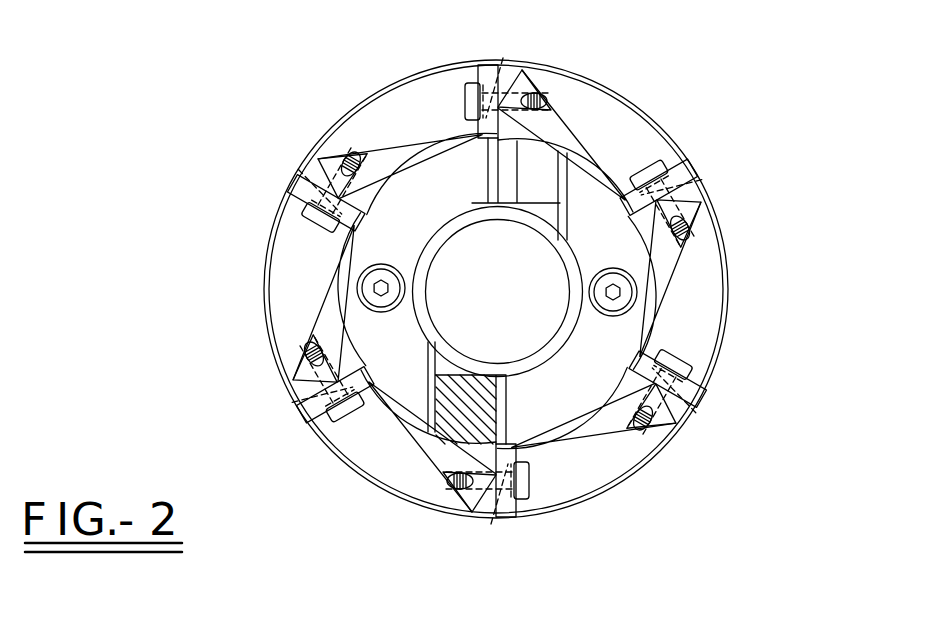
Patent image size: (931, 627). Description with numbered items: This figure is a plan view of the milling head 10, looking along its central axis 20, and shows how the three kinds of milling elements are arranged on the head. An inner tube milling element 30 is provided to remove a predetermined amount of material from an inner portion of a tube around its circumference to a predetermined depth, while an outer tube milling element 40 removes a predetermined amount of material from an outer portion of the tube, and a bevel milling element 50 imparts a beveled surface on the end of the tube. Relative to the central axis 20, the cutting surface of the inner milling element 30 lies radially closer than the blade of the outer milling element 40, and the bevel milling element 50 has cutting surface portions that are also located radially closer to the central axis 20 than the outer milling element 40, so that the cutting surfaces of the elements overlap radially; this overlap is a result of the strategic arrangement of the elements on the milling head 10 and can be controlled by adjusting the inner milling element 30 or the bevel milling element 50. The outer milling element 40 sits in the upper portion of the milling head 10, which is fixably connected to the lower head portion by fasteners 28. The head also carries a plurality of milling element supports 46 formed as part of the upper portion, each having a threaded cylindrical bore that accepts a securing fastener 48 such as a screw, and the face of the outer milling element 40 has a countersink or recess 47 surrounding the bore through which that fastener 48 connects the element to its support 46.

The milling head 10 is at (302, 143).
The central axis 20 is at (497, 293).
The fastener 28 is at (358, 287).
The inner tube milling element 30 is at (445, 418).
The outer tube milling element 40 is at (490, 62).
The milling element support 46 is at (322, 394).
The countersink or recess 47 is at (503, 58).
The securing element or fastener 48 is at (541, 95).
The bevel milling element 50 is at (561, 164).